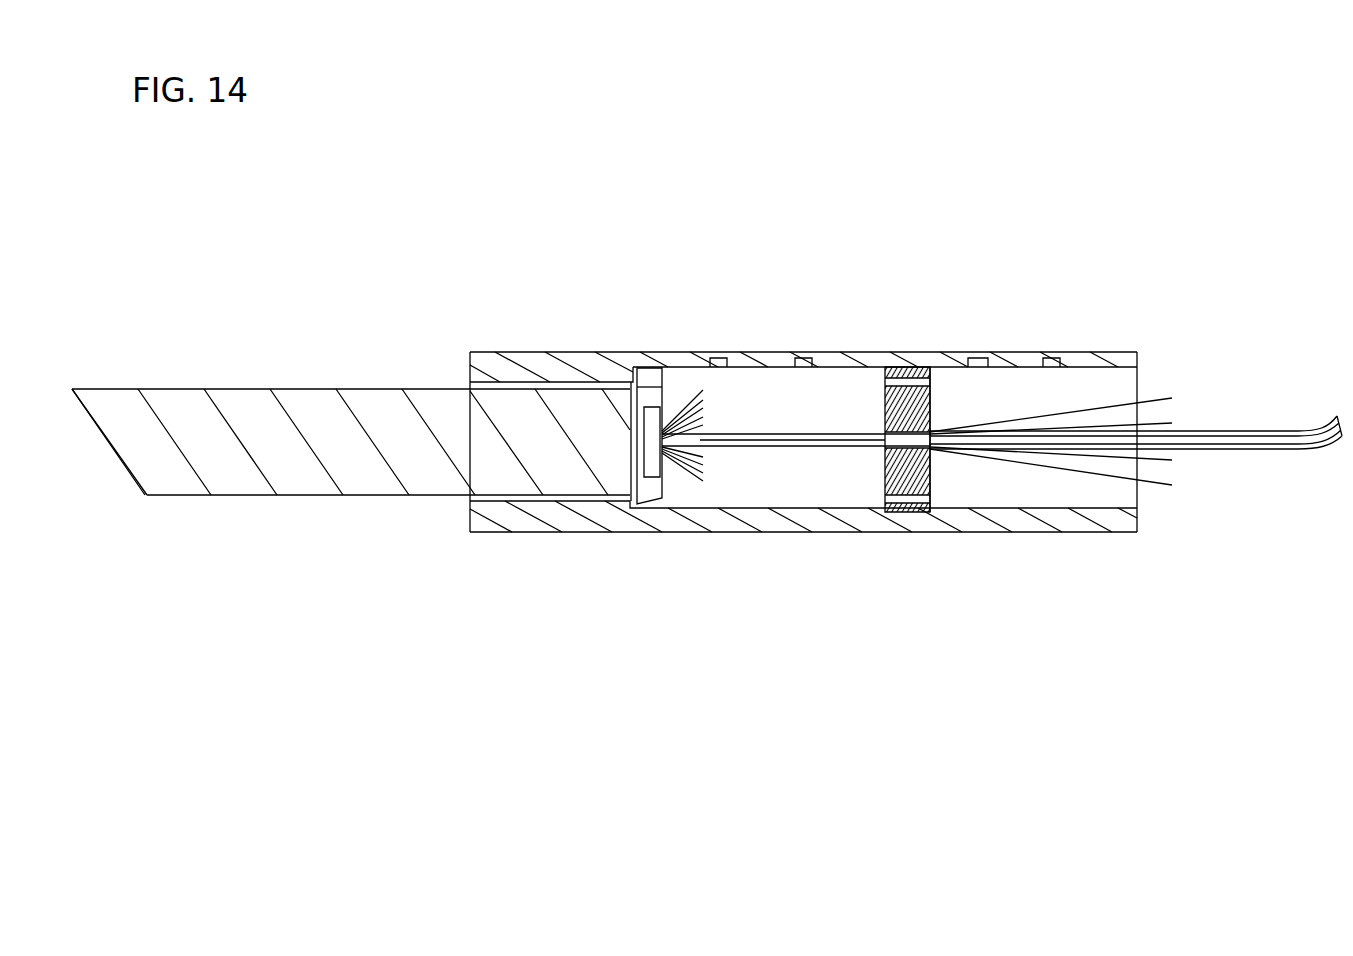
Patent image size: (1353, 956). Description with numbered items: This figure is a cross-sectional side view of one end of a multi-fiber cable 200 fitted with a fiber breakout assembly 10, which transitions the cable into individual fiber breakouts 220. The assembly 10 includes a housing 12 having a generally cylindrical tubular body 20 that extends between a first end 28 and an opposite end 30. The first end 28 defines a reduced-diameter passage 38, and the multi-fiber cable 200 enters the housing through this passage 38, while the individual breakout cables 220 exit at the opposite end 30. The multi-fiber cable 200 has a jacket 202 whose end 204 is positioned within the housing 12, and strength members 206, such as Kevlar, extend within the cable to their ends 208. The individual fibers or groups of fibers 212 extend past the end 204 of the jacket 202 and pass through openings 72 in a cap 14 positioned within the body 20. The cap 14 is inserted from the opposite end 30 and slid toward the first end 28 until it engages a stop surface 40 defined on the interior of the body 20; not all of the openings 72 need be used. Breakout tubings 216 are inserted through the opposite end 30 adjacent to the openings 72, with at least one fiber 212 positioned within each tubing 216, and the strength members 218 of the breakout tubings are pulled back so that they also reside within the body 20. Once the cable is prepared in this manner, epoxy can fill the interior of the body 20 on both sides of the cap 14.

The fiber breakout assembly 10 is at (1143, 293).
The housing 12 is at (875, 350).
The cap 14 is at (928, 368).
The tubular body 20 is at (962, 525).
The first end 28 is at (468, 526).
The opposite end 30 is at (1140, 530).
The passage 38 is at (493, 381).
The stop surface 40 is at (892, 512).
The openings 72 is at (930, 408).
The multi-fiber cable 200 is at (253, 388).
The jacket 202 is at (643, 385).
The end of jacket 204 is at (648, 387).
The strength members 206 is at (696, 478).
The ends of strength members 208 is at (700, 462).
The fibers 212 is at (798, 447).
The breakout tubings 216 is at (1238, 452).
The strength members of breakout tubings 218 is at (1030, 468).
The fiber breakouts 220 is at (1245, 430).